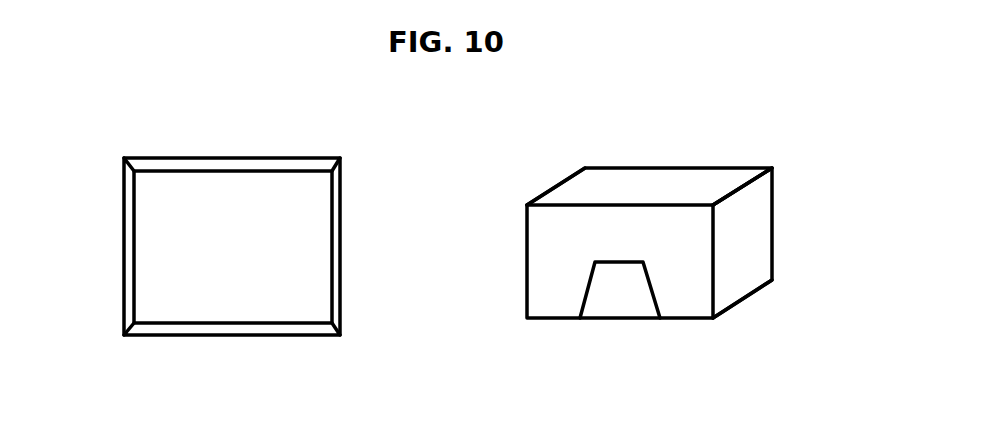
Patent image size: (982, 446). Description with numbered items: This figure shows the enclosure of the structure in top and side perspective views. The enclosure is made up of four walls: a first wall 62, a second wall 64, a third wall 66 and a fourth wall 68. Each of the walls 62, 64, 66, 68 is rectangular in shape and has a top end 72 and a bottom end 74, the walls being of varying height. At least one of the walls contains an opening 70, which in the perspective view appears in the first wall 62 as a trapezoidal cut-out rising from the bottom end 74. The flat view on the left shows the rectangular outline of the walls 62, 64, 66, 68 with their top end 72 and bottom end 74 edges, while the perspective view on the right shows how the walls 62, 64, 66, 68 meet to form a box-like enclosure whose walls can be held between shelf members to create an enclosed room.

The first wall 62 is at (207, 332).
The second wall 64 is at (120, 242).
The third wall 66 is at (172, 165).
The fourth wall 68 is at (337, 250).
The opening 70 is at (600, 295).
The top end 72 is at (743, 180).
The bottom end 74 is at (733, 312).